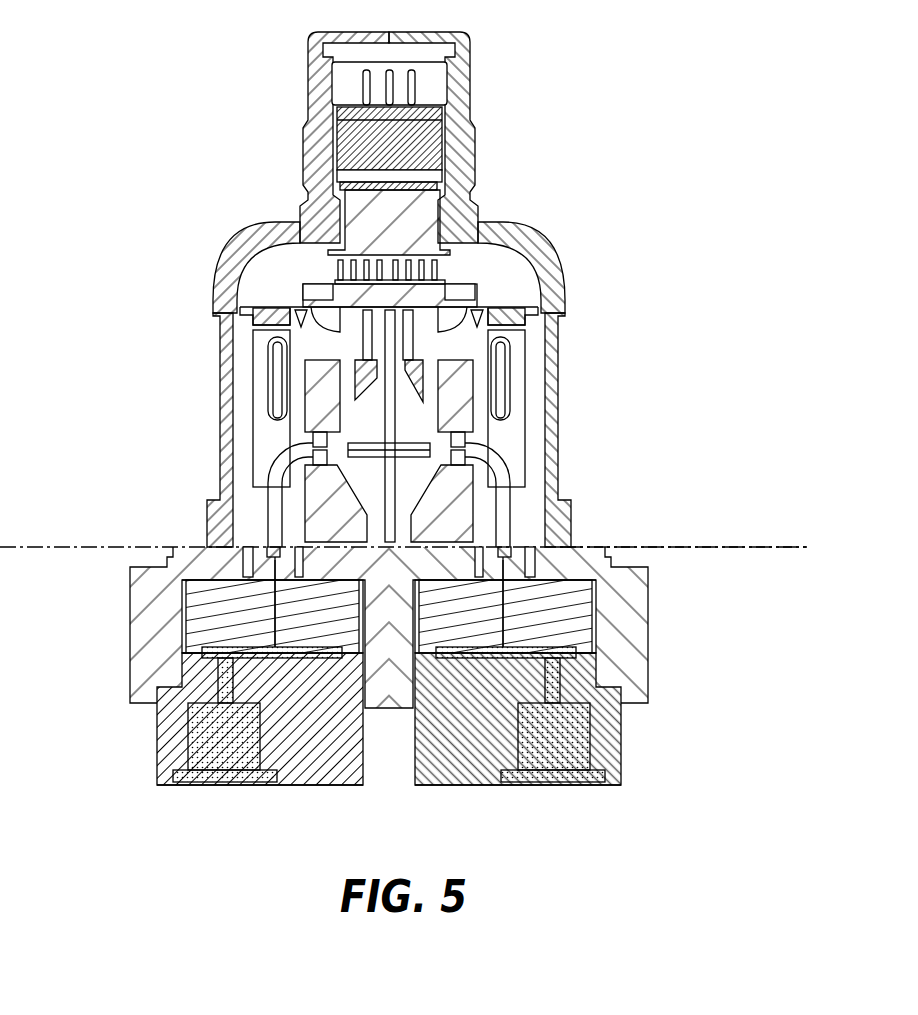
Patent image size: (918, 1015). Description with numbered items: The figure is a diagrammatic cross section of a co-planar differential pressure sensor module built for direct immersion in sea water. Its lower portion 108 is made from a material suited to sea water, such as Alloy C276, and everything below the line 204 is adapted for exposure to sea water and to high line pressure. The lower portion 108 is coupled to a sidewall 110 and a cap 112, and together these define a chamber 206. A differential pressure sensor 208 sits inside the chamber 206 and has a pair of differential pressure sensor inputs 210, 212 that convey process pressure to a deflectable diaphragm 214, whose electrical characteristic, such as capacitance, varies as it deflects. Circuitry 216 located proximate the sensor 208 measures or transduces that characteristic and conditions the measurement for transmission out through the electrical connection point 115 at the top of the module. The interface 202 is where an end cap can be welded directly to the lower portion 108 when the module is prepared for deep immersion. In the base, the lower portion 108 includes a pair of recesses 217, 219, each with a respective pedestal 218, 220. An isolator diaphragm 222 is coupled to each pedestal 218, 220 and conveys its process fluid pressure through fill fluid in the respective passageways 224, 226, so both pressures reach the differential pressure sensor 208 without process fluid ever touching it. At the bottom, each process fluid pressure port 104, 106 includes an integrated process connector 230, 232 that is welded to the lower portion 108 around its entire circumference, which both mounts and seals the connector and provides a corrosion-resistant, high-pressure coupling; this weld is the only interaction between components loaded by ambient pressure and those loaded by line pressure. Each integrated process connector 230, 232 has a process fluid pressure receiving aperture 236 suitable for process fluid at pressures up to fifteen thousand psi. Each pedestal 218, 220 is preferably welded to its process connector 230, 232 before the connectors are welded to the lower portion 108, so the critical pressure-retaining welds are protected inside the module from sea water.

The process fluid pressure port 104 is at (159, 760).
The process fluid pressure port 106 is at (619, 760).
The lower portion 108 is at (652, 605).
The sidewall 110 is at (560, 388).
The cap 112 is at (558, 250).
The electrical connection point 115 is at (477, 157).
The interface 202 is at (717, 545).
The line 204 is at (68, 545).
The chamber 206 is at (495, 265).
The differential pressure sensor 208 is at (330, 357).
The differential pressure sensor input 210 is at (307, 445).
The differential pressure sensor input 212 is at (480, 443).
The deflectable diaphragm 214 is at (383, 422).
The circuitry 216 is at (312, 278).
The recess 217 is at (182, 592).
The pedestal 218 is at (182, 612).
The recess 219 is at (600, 590).
The pedestal 220 is at (597, 610).
The isolator diaphragm 222 is at (290, 632).
The passageway 224 is at (193, 659).
The passageway 226 is at (584, 663).
The integrated process connector 230 is at (157, 716).
The integrated process connector 232 is at (623, 717).
The process fluid pressure receiving aperture 236 is at (210, 775).